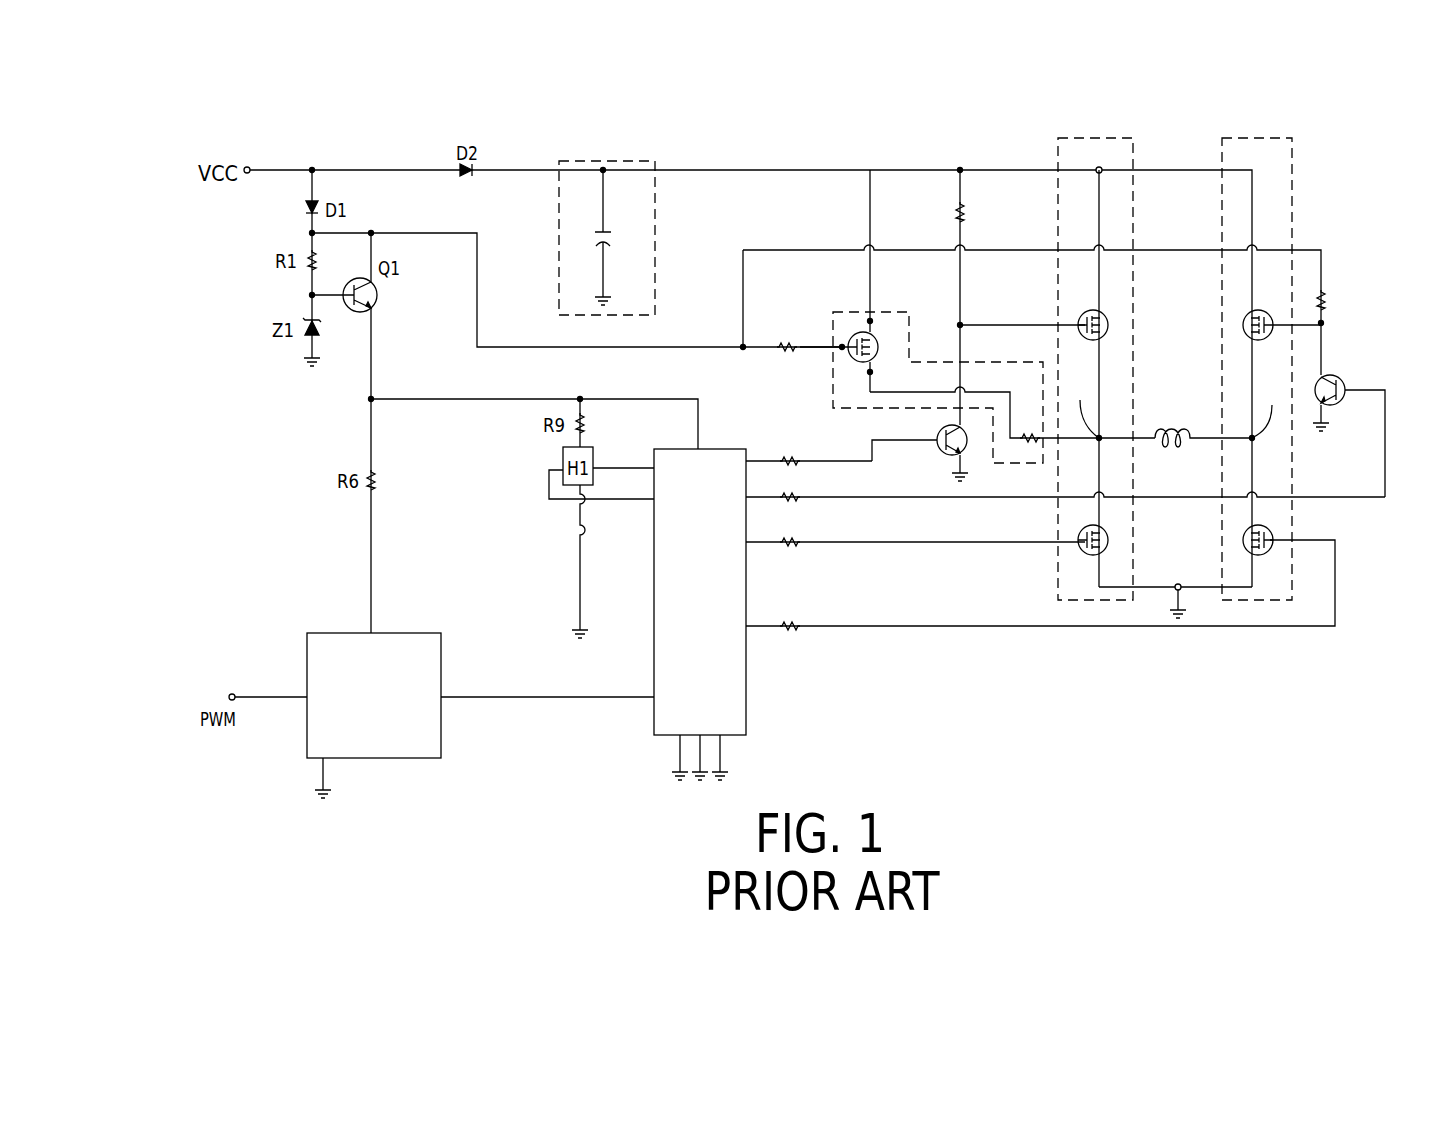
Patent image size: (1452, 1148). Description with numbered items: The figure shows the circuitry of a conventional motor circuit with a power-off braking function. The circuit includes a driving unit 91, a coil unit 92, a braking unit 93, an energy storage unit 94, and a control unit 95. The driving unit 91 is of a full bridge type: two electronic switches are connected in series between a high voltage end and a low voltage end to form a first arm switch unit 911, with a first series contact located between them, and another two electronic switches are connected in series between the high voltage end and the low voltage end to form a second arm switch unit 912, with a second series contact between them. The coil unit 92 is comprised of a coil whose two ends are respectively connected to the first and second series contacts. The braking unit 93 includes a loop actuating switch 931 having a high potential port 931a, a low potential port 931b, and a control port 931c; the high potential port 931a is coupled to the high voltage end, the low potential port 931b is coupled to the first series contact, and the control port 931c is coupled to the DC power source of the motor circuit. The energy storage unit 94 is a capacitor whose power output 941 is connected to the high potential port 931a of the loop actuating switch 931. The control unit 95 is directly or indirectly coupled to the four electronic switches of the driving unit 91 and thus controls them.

The driving unit 91 is at (1171, 731).
The first arm switch unit 911 is at (1098, 603).
The second arm switch unit 912 is at (1235, 603).
The coil unit 92 is at (1180, 430).
The braking unit 93 is at (997, 468).
The loop actuating switch 931 is at (878, 340).
The high potential port 931a is at (869, 320).
The low potential port 931b is at (870, 372).
The control port 931c is at (842, 347).
The energy storage unit 94 is at (655, 205).
The power output 941 is at (603, 170).
The control unit 95 is at (731, 735).